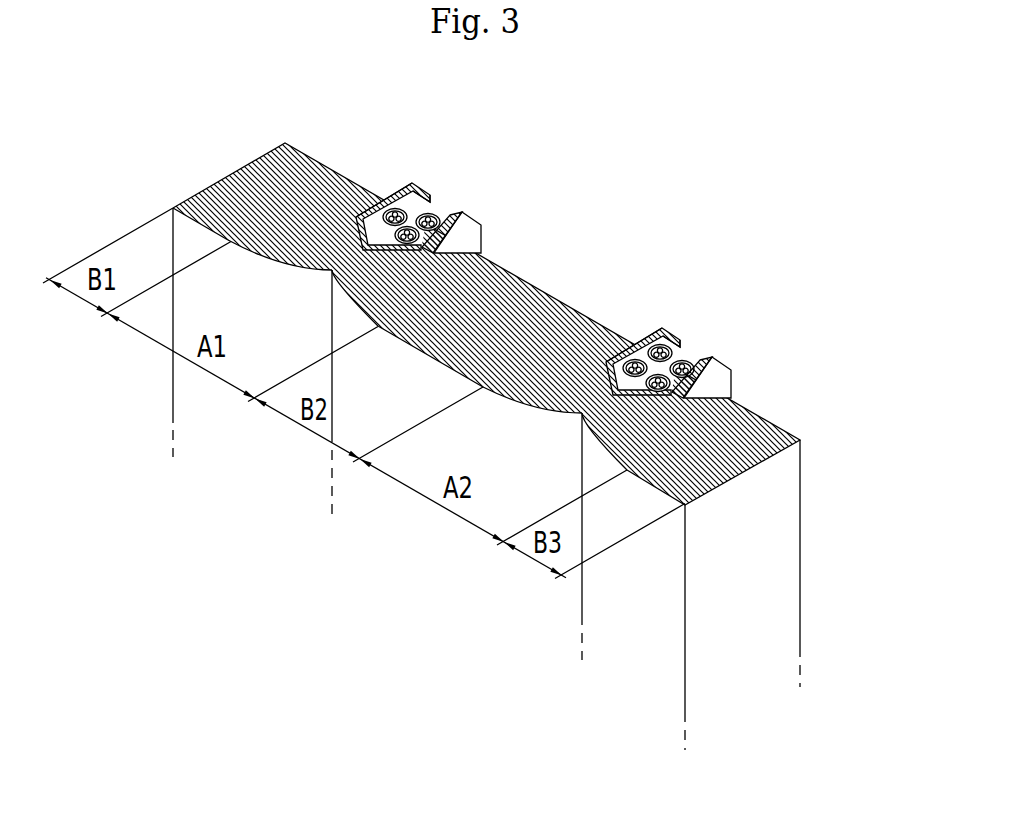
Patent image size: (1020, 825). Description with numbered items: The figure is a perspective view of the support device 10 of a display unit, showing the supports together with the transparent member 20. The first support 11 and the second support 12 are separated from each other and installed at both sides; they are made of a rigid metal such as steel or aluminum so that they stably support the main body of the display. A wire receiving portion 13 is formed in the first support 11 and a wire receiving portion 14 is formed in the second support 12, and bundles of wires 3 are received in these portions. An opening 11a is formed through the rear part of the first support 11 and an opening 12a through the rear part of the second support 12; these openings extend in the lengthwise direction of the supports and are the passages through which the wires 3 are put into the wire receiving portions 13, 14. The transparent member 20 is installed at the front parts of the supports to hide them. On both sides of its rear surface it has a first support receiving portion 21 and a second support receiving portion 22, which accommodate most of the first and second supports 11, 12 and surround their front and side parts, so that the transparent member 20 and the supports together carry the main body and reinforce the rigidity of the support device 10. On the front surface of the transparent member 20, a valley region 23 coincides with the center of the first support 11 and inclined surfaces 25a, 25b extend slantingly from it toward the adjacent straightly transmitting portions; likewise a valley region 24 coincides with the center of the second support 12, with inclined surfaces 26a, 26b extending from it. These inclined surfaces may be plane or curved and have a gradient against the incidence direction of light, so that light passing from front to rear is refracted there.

The wires 3 is at (452, 210).
The support device 10 is at (822, 515).
The first support 11 is at (399, 177).
The opening 11a is at (435, 208).
The second support 12 is at (654, 322).
The opening 12a is at (683, 347).
The wire receiving portion 13 is at (483, 247).
The wire receiving portion 14 is at (730, 393).
The transparent member 20 is at (238, 178).
The first support receiving portion 21 is at (358, 209).
The second support receiving portion 22 is at (617, 357).
The valley region 23 is at (303, 357).
The valley region 24 is at (550, 502).
The inclined surface 25a is at (290, 265).
The inclined surface 25b is at (337, 302).
The inclined surface 26a is at (533, 410).
The inclined surface 26b is at (587, 448).